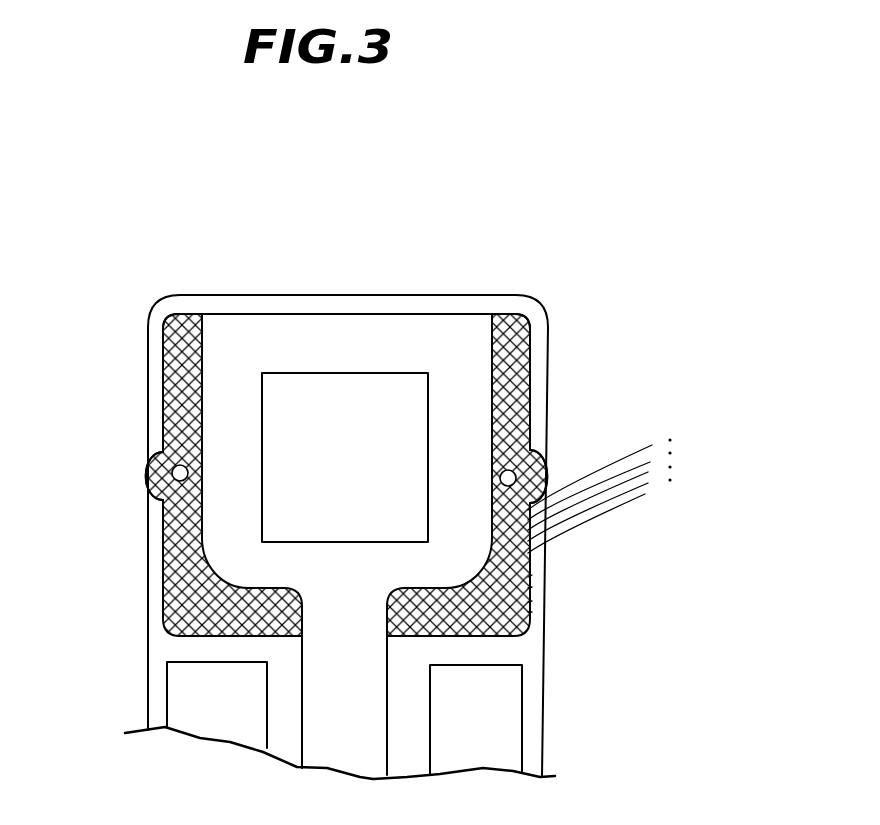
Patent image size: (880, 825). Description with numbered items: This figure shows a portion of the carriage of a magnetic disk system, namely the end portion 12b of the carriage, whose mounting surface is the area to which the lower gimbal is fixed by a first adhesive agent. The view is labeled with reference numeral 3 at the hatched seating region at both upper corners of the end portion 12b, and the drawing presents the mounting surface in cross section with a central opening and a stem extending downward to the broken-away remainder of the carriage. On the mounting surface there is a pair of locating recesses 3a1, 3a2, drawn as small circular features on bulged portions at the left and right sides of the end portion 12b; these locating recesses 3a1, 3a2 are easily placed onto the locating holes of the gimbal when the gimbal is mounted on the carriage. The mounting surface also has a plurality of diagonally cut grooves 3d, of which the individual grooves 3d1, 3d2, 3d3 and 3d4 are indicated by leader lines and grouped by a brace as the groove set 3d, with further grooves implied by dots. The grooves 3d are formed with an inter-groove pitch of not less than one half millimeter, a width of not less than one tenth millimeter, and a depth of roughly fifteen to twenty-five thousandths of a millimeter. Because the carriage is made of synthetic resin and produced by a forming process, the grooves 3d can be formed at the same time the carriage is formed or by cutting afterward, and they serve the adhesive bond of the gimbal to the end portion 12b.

The seal ring 3 is at (172, 318).
The end portion of the carriage 12b is at (352, 307).
The locating recess 3a1 is at (150, 473).
The locating recess 3a2 is at (545, 448).
The diagonally cut grooves 3d is at (702, 415).
The diagonally cut groove 3d1 is at (528, 612).
The diagonally cut groove 3d2 is at (528, 602).
The diagonally cut groove 3d3 is at (528, 588).
The diagonally cut groove 3d4 is at (528, 577).